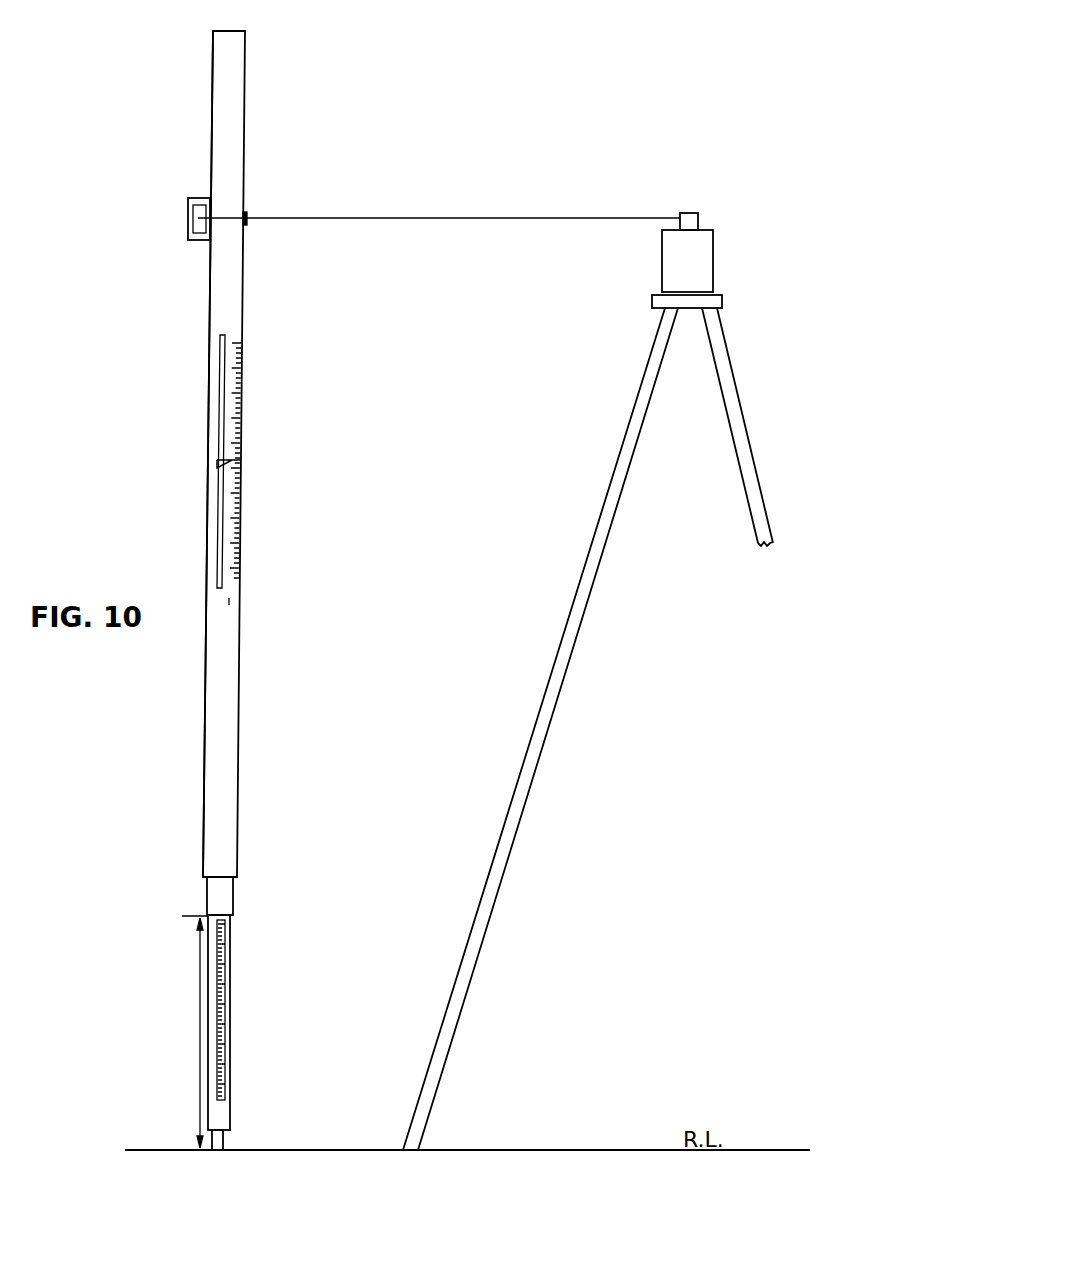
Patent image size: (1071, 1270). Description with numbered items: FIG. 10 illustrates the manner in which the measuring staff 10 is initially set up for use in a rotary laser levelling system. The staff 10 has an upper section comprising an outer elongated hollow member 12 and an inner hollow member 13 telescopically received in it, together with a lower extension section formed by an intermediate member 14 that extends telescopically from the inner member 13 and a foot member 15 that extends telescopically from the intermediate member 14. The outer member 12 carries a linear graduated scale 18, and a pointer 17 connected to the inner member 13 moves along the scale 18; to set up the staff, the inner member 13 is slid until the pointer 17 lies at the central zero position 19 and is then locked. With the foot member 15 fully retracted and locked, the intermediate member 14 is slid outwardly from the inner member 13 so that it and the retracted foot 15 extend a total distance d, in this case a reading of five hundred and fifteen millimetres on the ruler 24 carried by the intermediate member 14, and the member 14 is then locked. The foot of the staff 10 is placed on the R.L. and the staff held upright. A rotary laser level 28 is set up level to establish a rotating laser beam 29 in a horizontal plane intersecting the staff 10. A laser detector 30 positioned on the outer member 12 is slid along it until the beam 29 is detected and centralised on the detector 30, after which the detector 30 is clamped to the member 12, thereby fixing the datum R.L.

The measuring staff 10 is at (258, 500).
The outer elongated hollow member 12 is at (242, 302).
The inner hollow member 13 is at (237, 900).
The intermediate member 14 is at (232, 1035).
The foot member 15 is at (228, 1133).
The pointer 17 is at (238, 458).
The graduated scale 18 is at (229, 598).
The zero position 19 is at (241, 461).
The ruler 24 is at (225, 982).
The rotary laser level 28 is at (700, 200).
The laser beam 29 is at (382, 218).
The laser detector 30 is at (186, 200).